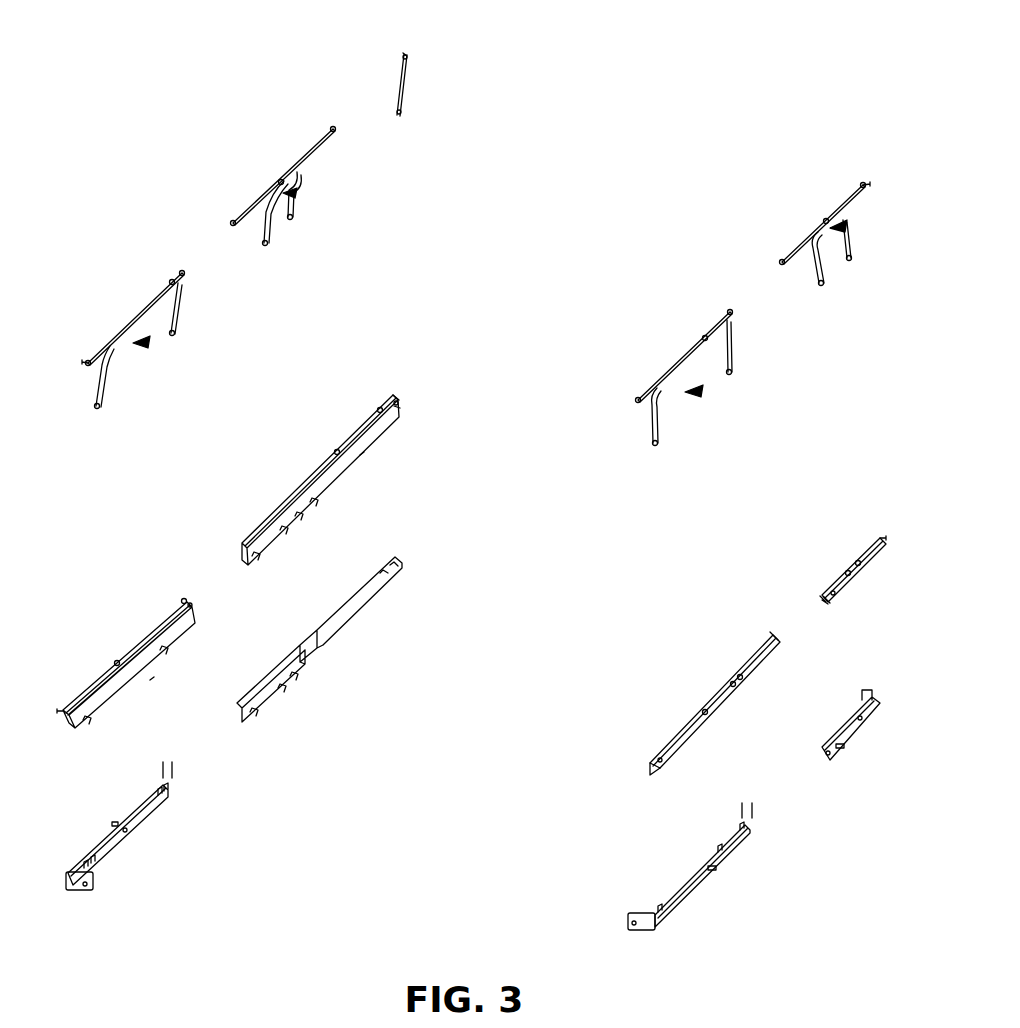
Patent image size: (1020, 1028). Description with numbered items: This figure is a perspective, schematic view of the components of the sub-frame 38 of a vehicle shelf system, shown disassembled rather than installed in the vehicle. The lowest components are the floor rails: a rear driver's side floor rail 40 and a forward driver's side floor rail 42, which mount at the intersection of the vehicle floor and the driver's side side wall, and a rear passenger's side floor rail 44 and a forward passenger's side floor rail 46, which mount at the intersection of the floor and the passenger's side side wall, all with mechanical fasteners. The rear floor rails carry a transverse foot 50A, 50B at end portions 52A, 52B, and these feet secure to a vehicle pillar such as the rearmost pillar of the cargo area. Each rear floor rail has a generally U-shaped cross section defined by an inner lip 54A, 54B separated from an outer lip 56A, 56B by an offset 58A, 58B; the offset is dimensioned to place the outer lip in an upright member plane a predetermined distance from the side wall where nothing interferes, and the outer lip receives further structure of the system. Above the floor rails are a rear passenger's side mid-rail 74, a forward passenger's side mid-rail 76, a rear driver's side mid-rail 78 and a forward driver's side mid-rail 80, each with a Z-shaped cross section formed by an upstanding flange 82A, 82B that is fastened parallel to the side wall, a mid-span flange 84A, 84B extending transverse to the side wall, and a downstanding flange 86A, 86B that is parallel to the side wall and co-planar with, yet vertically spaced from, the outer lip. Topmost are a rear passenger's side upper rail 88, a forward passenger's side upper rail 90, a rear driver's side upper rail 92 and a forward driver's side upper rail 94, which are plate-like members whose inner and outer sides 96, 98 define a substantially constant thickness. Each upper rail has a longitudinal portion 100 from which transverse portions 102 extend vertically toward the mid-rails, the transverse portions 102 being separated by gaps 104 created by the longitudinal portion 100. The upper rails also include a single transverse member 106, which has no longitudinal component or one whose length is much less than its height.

The sub-frame 38 is at (712, 77).
The rear driver's side floor rail 40 is at (103, 838).
The forward driver's side floor rail 42 is at (322, 622).
The rear passenger's side floor rail 44 is at (684, 903).
The forward passenger's side floor rail 46 is at (860, 727).
The transverse foot 50A is at (72, 893).
The transverse foot 50B is at (640, 927).
The end portion 52A is at (58, 858).
The end portion 52B is at (645, 890).
The inner lip 54A is at (148, 824).
The inner lip 54B is at (665, 902).
The outer lip 56A is at (148, 792).
The outer lip 56B is at (728, 850).
The offset 58A is at (130, 771).
The offset 58B is at (708, 811).
The rear passenger's side mid-rail 74 is at (722, 684).
The forward passenger's side mid-rail 76 is at (856, 555).
The rear driver's side mid-rail 78 is at (110, 661).
The forward driver's side mid-rail 80 is at (293, 487).
The upstanding flange 82A is at (345, 440).
The upstanding flange 82B is at (868, 540).
The mid-span flange 84A is at (397, 402).
The mid-span flange 84B is at (833, 598).
The downstanding flange 86A is at (372, 446).
The downstanding flange 86B is at (820, 598).
The rear passenger's side upper rail 88 is at (680, 358).
The forward passenger's side upper rail 90 is at (838, 207).
The rear driver's side upper rail 92 is at (145, 305).
The forward driver's side upper rail 94 is at (300, 160).
The inner side 96 is at (242, 204).
The outer side 98 is at (313, 150).
The longitudinal portion 100 is at (268, 189).
The transverse portion 102 is at (291, 219).
The gap 104 is at (297, 194).
The single transverse member 106 is at (408, 82).